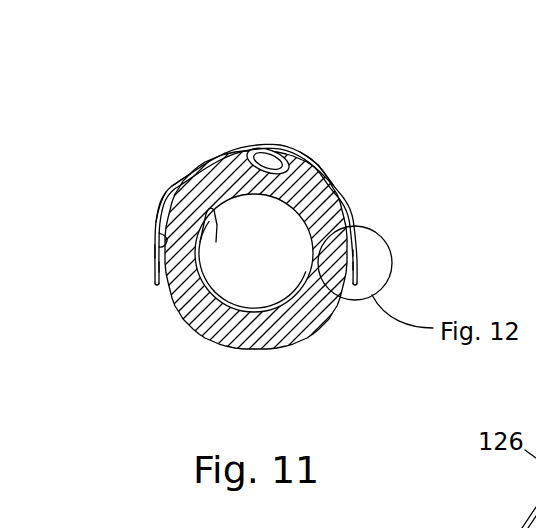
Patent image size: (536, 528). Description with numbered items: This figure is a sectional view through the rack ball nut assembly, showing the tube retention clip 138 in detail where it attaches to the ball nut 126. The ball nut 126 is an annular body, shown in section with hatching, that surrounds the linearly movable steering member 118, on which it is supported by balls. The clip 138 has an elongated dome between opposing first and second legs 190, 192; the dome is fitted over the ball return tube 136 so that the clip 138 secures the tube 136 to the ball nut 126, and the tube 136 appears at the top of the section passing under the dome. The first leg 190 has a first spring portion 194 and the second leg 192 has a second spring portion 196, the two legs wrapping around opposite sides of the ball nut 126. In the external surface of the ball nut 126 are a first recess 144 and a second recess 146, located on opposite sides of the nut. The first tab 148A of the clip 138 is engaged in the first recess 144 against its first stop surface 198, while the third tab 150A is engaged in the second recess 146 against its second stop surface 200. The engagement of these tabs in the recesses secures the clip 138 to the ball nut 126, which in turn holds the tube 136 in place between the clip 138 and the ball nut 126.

The linearly movable steering member 118 is at (267, 293).
The ball nut 126 is at (317, 315).
The ball return tube 136 is at (281, 133).
The tube retention clip 138 is at (202, 165).
The first recess 144 is at (350, 267).
The second recess 146 is at (163, 265).
The first tab 148A is at (355, 253).
The third tab 150A is at (157, 247).
The first leg 190 is at (302, 155).
The second leg 192 is at (183, 177).
The first spring portion 194 is at (347, 193).
The second spring portion 196 is at (163, 187).
The first stop surface 198 is at (323, 178).
The second stop surface 200 is at (162, 230).